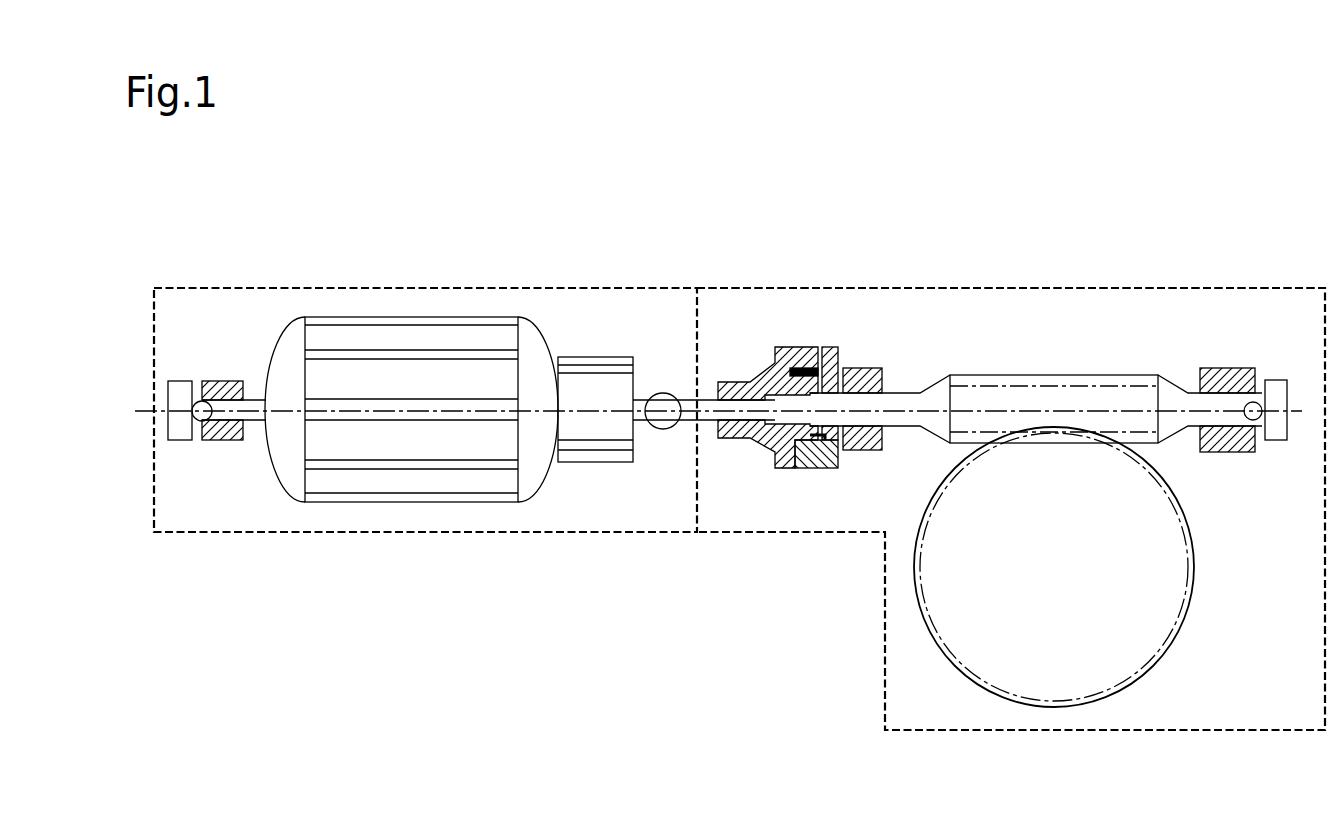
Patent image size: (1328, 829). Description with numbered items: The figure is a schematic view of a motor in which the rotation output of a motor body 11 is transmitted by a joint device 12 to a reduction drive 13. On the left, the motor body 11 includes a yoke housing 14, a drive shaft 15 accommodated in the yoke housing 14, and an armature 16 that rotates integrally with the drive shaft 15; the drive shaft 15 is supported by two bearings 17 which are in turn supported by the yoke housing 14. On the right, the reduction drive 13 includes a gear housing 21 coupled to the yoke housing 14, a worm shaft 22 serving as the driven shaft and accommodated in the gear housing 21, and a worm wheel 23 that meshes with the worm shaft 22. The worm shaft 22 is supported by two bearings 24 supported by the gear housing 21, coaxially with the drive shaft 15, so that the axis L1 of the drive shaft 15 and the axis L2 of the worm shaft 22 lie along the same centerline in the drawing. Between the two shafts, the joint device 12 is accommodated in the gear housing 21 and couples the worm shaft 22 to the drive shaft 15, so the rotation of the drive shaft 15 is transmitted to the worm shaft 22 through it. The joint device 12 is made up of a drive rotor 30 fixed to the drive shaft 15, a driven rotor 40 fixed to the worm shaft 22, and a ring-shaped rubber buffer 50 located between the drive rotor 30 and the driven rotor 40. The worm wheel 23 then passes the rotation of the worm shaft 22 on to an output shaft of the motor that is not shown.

The motor body 11 is at (213, 286).
The joint device 12 is at (782, 407).
The reduction drive 13 is at (1157, 286).
The yoke housing 14 is at (471, 370).
The drive shaft 15 is at (663, 398).
The armature 16 is at (396, 317).
The bearings 17 is at (220, 440).
The gear housing 21 is at (917, 287).
The worm shaft 22 is at (1053, 375).
The worm wheel 23 is at (1195, 540).
The bearings 24 is at (858, 368).
The drive rotor 30 is at (729, 440).
The driven rotor 40 is at (814, 470).
The rubber buffer 50 is at (808, 358).
The first axis L1 is at (255, 398).
The second axis L2 is at (1136, 410).